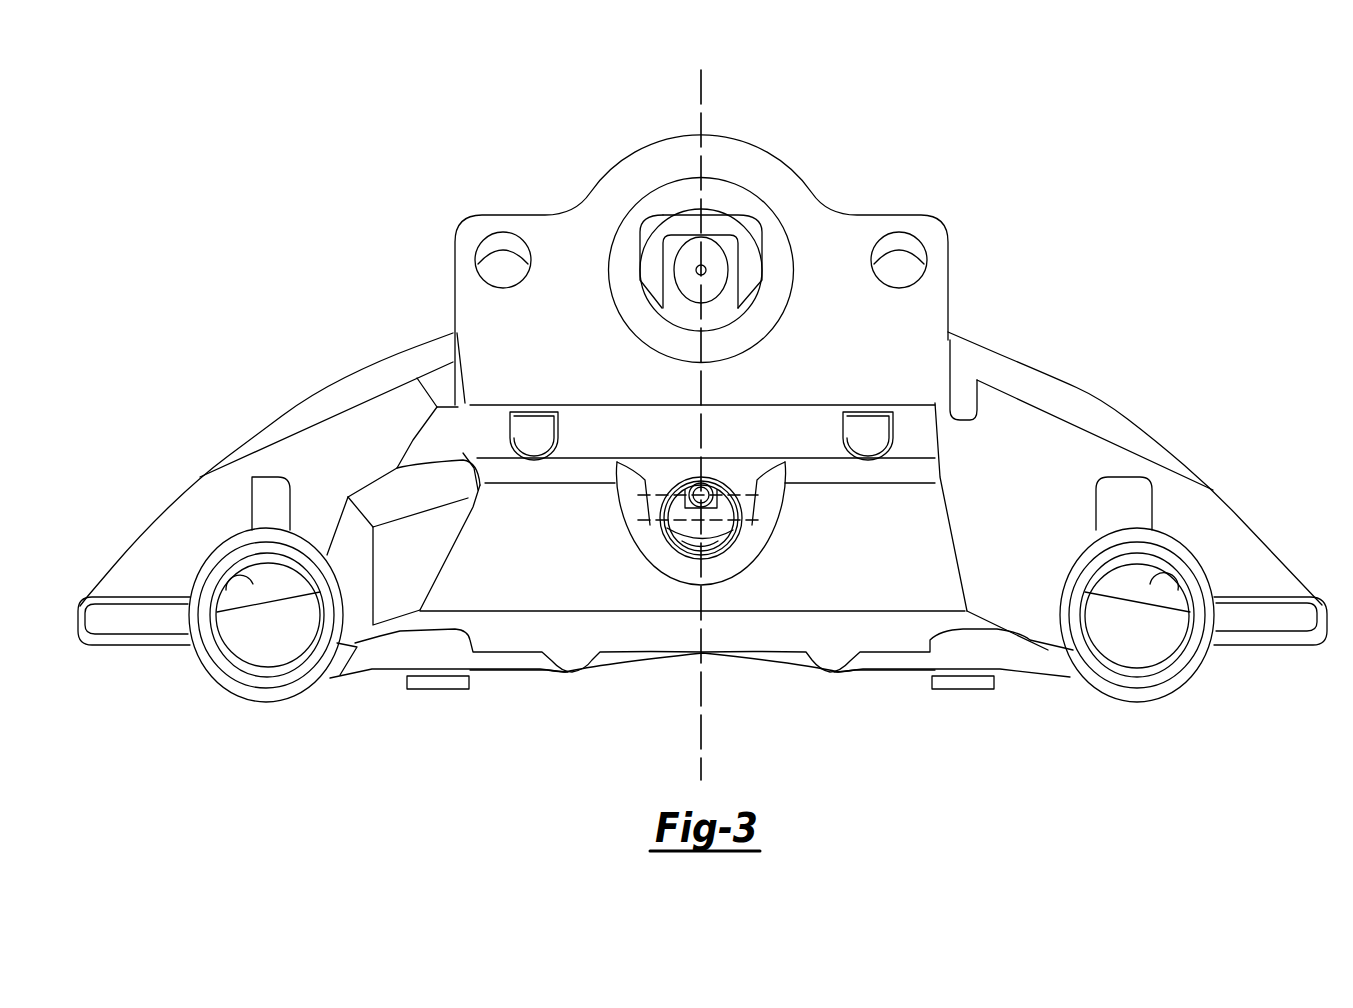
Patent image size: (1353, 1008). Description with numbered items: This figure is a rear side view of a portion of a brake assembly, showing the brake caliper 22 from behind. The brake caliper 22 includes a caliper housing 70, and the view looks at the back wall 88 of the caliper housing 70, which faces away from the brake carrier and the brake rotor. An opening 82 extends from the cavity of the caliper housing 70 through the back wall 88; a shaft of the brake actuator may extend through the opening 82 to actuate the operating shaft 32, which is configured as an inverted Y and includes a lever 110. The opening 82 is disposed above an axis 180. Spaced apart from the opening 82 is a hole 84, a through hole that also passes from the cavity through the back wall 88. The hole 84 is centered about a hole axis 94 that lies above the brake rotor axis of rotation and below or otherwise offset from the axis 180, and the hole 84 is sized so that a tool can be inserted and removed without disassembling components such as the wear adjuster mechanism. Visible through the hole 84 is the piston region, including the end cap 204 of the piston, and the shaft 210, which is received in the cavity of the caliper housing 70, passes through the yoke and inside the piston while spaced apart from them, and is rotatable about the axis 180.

The brake caliper 22 is at (702, 517).
The caliper housing 70 is at (350, 375).
The operating shaft 32 is at (661, 198).
The lever 110 is at (676, 245).
The opening 82 is at (728, 205).
The back wall 88 is at (582, 320).
The hole 84 is at (683, 547).
The hole axis 94 is at (715, 521).
The axis 180 is at (697, 490).
The end cap 204 is at (722, 506).
The shaft 210 is at (710, 538).